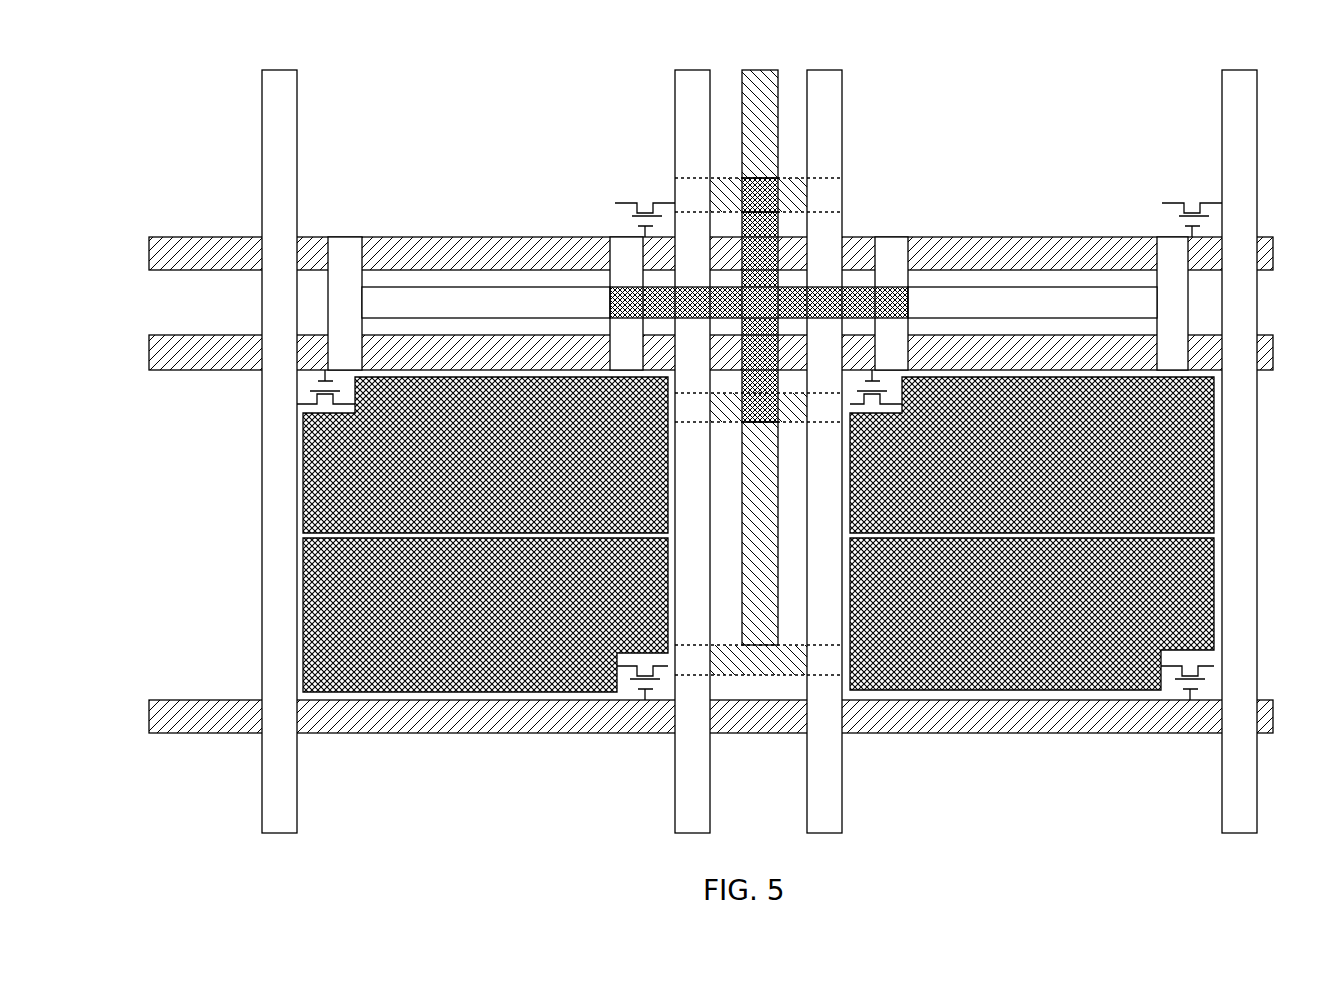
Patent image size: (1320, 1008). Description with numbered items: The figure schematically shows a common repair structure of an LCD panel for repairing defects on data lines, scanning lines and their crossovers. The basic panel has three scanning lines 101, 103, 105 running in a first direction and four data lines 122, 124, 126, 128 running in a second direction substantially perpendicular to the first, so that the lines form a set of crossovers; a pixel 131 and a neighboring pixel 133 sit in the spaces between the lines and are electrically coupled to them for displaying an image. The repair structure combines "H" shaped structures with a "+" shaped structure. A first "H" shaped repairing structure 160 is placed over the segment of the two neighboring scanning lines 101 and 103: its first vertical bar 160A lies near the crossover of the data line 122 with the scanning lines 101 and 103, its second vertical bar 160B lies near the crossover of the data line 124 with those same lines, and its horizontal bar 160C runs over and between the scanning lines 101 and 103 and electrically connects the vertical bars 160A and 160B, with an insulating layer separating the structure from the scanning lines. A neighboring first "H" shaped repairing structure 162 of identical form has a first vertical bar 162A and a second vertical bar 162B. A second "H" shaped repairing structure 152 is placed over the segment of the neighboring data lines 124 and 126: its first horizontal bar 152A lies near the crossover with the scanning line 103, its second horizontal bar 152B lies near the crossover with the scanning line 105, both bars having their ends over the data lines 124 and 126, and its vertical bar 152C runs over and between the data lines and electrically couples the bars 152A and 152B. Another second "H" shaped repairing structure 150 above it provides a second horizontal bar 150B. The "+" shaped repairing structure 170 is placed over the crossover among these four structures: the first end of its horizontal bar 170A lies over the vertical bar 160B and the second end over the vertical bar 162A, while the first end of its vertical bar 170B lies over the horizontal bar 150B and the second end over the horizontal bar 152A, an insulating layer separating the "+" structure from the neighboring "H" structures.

The scanning line 101 is at (731, 231).
The scanning line 103 is at (731, 328).
The scanning line 105 is at (730, 691).
The data line 122 is at (304, 451).
The data line 124 is at (643, 451).
The data line 126 is at (852, 451).
The data line 128 is at (1266, 451).
The pixel 131 is at (290, 537).
The second pixel electrode 133 is at (1225, 533).
The second "H" shaped repairing structure 150 is at (687, 141).
The second horizontal bar 150B is at (687, 176).
The second "H" shaped repairing structure 152 is at (673, 587).
The first horizontal bar 152A is at (623, 585).
The second horizontal bar 152B is at (808, 710).
The vertical bar 152C is at (693, 595).
The first "H" shaped repairing structure 160 is at (485, 267).
The first vertical bar 160A is at (367, 267).
The second vertical bar 160B is at (605, 270).
The horizontal bar 160C is at (486, 241).
The first "H" shaped repairing structure 162 is at (1031, 258).
The first vertical bar 162A is at (920, 258).
The second gate electrode second portion 162B is at (1142, 258).
The "+" shaped repairing structure 170 is at (823, 281).
The horizontal bar 170A is at (823, 248).
The vertical bar 170B is at (818, 185).